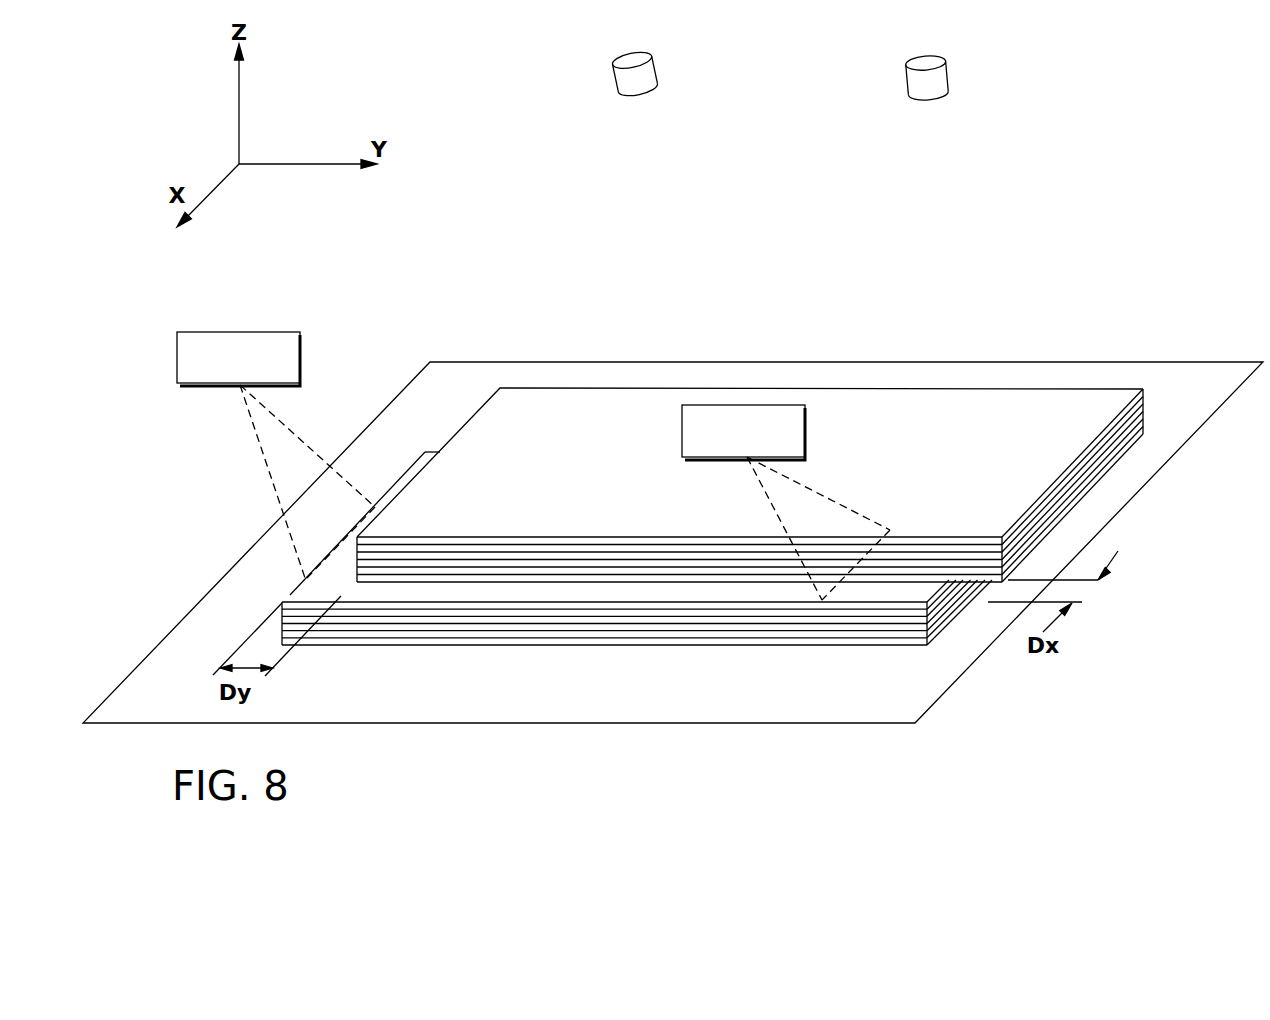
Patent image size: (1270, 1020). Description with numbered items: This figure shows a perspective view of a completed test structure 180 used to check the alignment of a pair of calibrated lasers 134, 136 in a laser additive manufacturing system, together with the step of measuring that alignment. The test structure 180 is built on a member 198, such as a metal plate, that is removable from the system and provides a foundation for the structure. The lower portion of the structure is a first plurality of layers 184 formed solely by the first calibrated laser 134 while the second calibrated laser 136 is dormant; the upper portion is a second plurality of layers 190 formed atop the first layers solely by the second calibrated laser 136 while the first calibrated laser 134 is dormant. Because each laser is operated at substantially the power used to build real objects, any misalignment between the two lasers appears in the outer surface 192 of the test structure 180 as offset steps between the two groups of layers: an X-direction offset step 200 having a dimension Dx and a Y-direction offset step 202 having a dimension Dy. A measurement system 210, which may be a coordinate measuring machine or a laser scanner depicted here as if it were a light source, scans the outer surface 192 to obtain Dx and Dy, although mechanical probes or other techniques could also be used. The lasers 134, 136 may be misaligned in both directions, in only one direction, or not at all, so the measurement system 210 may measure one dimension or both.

The first calibrated laser 134 is at (933, 80).
The second calibrated laser 136 is at (643, 72).
The test structure 180 is at (768, 439).
The first plurality of layers 184 is at (747, 612).
The second plurality of layers 190 is at (506, 493).
The outer surface 192 is at (562, 679).
The member 198 is at (128, 711).
The X-direction offset step 200 is at (562, 679).
The Y-direction offset step 202 is at (337, 565).
The measurement system 210 is at (216, 368).